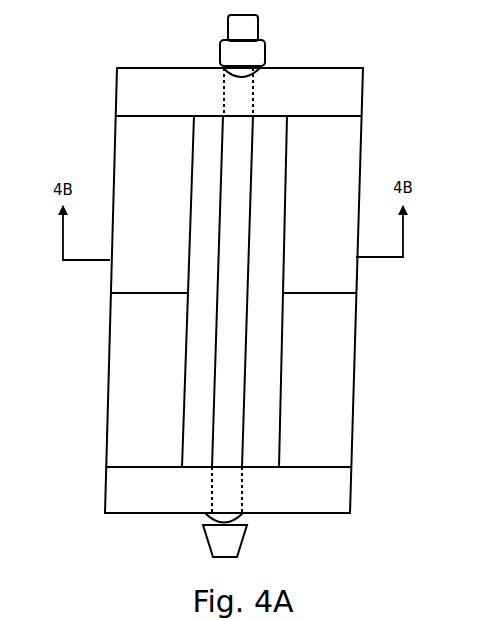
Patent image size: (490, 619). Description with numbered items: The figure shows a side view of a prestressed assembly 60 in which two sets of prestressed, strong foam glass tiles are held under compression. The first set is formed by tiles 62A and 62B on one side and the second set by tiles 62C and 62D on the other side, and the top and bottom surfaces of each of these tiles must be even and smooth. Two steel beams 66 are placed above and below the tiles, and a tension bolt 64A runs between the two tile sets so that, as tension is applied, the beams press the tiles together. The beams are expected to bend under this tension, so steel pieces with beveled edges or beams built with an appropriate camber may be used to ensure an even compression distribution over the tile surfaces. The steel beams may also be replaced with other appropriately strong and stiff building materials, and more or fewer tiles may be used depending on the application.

The prestressed assembly 60 is at (377, 110).
The prestressed strong foam glass tile 62A is at (150, 165).
The prestressed strong foam glass tile 62B is at (133, 392).
The prestressed strong foam glass tile 62C is at (337, 177).
The prestressed strong foam glass tile 62D is at (312, 403).
The tension bolt 64A is at (228, 340).
The steel beam 66 is at (280, 93).